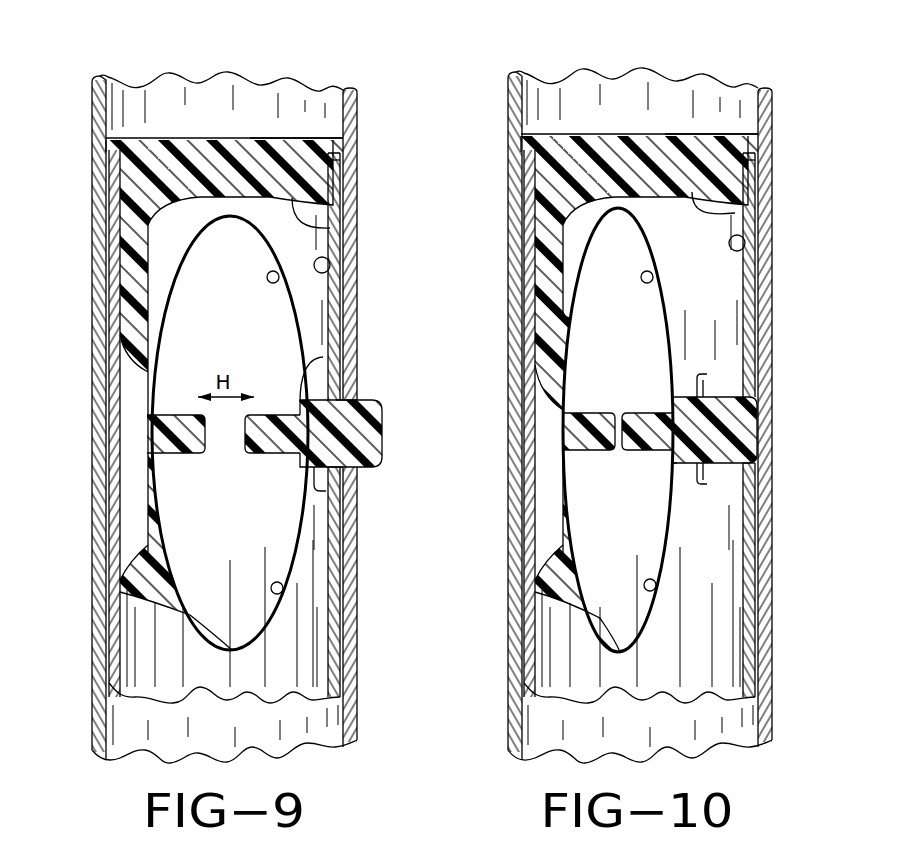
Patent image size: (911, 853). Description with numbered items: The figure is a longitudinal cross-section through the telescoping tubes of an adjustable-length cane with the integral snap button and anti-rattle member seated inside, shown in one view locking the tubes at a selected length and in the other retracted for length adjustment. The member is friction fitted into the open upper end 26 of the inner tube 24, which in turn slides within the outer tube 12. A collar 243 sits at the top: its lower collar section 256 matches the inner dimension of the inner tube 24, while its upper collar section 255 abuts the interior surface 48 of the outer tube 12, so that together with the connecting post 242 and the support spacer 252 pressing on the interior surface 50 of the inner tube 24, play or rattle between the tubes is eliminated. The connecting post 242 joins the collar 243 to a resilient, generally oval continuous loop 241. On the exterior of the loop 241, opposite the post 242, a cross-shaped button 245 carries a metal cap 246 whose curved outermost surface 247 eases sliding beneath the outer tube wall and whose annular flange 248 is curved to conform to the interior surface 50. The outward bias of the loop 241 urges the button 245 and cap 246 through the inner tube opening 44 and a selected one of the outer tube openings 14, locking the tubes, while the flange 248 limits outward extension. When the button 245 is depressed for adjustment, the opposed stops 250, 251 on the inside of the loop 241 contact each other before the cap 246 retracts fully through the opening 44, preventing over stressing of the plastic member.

In FIG. 9, the outer tube 12 is at (358, 122).
In FIG. 10, the outer tube 12 is at (660, 390).
In FIG. 9, the openings of outer tube 14 is at (370, 457).
In FIG. 10, the openings of outer tube 14 is at (686, 423).
In FIG. 9, the inner tube 24 is at (287, 702).
In FIG. 10, the inner tube 24 is at (674, 734).
In FIG. 9, the open upper end of inner tube 26 is at (342, 178).
In FIG. 10, the open upper end of inner tube 26 is at (795, 160).
In FIG. 9, the opening of inner tube 44 is at (330, 484).
In FIG. 10, the opening of inner tube 44 is at (796, 469).
In FIG. 9, the interior surface of outer tube 48 is at (338, 134).
In FIG. 10, the interior surface of outer tube 48 is at (729, 84).
In FIG. 9, the interior surface of inner tube 50 is at (330, 270).
In FIG. 10, the interior surface of inner tube 50 is at (789, 244).
In FIG. 9, the resilient loop 241 is at (308, 334).
In FIG. 10, the resilient loop 241 is at (709, 430).
In FIG. 9, the connecting post 242 is at (130, 258).
In FIG. 10, the connecting post 242 is at (506, 368).
In FIG. 9, the collar 243 is at (184, 134).
In FIG. 10, the collar 243 is at (639, 121).
In FIG. 9, the button 245 is at (314, 396).
In FIG. 10, the button 245 is at (769, 375).
In FIG. 9, the metal cap 246 is at (358, 399).
In FIG. 10, the metal cap 246 is at (776, 496).
In FIG. 9, the curved outermost surface of cap 247 is at (383, 440).
In FIG. 10, the curved outermost surface of cap 247 is at (764, 430).
In FIG. 9, the annular flange 248 is at (324, 496).
In FIG. 10, the annular flange 248 is at (764, 516).
In FIG. 9, the stop 250 is at (262, 448).
In FIG. 10, the stop 250 is at (640, 405).
In FIG. 9, the stop 251 is at (186, 448).
In FIG. 10, the stop 251 is at (594, 457).
In FIG. 9, the support spacer 252 is at (130, 597).
In FIG. 10, the support spacer 252 is at (526, 551).
In FIG. 9, the upper collar section 255 is at (336, 132).
In FIG. 10, the upper collar section 255 is at (700, 75).
In FIG. 9, the lower collar section 256 is at (308, 222).
In FIG. 10, the lower collar section 256 is at (774, 206).